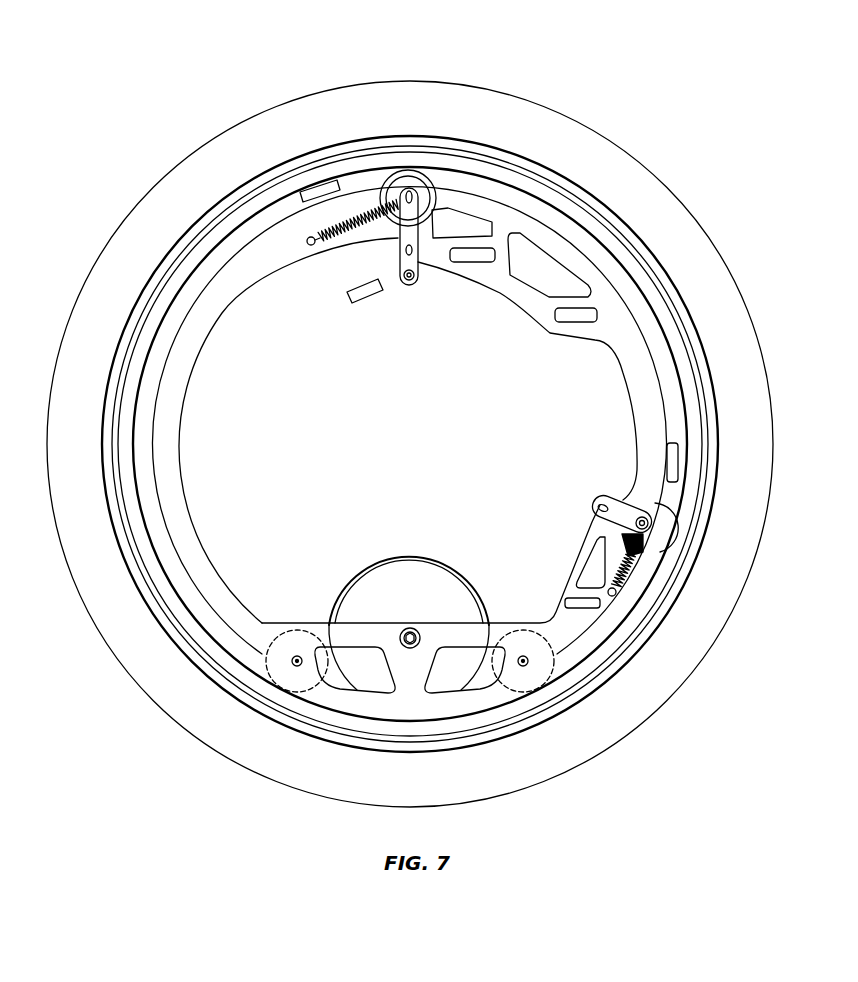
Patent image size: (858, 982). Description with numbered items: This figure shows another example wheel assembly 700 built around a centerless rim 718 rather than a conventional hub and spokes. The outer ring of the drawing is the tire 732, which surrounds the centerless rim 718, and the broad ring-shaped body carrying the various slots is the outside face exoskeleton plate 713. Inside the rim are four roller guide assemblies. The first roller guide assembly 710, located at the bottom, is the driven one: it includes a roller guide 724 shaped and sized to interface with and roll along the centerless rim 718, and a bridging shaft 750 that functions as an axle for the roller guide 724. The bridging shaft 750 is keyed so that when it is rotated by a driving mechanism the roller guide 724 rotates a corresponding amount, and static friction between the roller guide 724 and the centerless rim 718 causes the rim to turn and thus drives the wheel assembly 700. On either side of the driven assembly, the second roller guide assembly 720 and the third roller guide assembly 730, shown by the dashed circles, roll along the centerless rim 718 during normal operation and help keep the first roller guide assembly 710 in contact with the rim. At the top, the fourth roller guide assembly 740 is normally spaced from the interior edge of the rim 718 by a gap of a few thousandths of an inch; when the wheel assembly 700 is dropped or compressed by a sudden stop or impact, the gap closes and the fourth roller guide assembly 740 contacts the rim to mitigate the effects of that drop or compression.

The wheel assembly 700 is at (752, 110).
The first roller guide assembly 710 is at (479, 557).
The outside face exoskeleton plate 713 is at (640, 350).
The centerless rim 718 is at (715, 395).
The second roller guide assembly 720 is at (262, 668).
The roller guide 724 is at (462, 666).
The third roller guide assembly 730 is at (553, 664).
The tire 732 is at (753, 464).
The fourth roller guide assembly 740 is at (384, 188).
The bridging shaft 750 is at (404, 646).